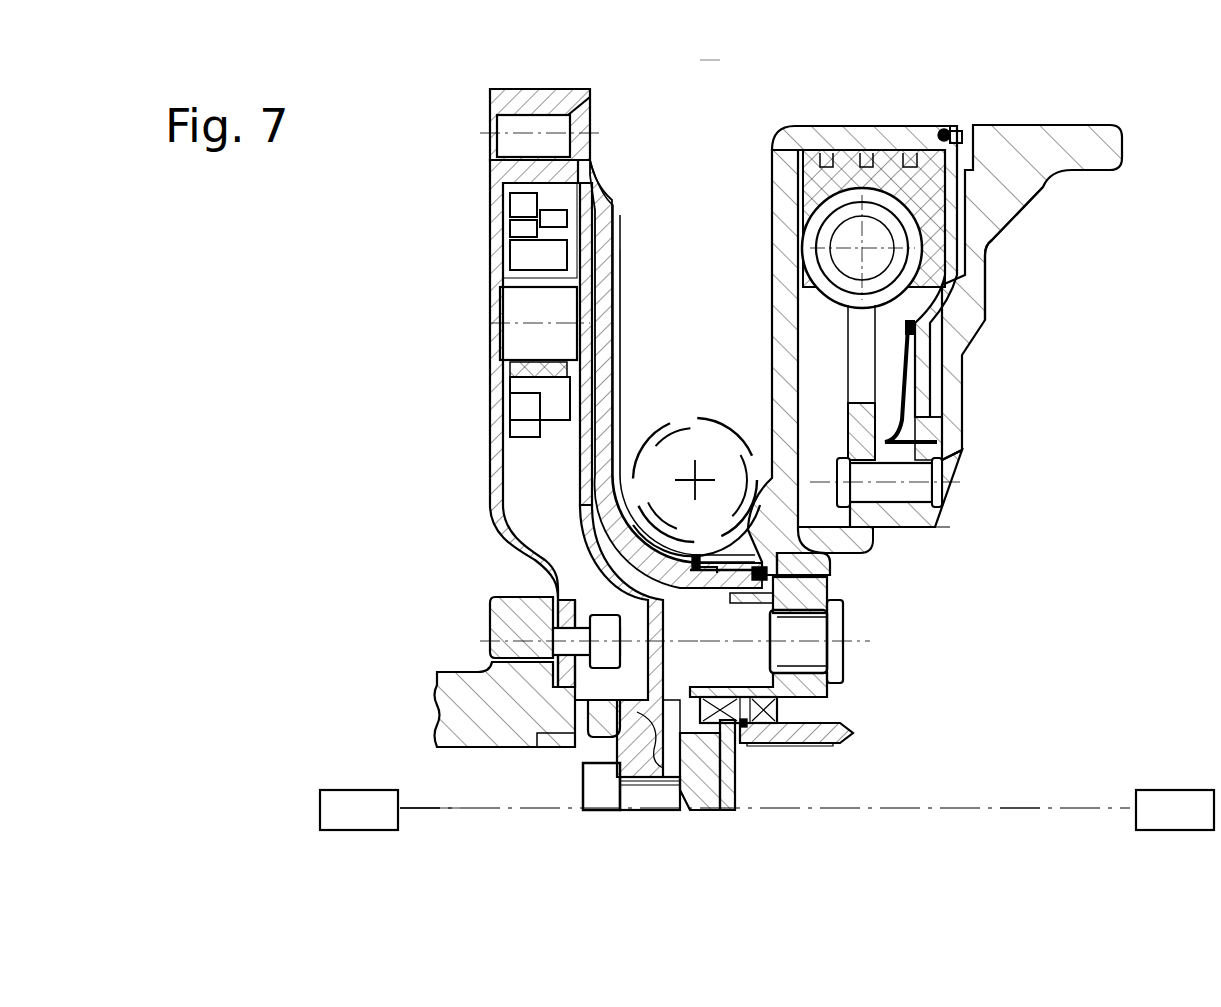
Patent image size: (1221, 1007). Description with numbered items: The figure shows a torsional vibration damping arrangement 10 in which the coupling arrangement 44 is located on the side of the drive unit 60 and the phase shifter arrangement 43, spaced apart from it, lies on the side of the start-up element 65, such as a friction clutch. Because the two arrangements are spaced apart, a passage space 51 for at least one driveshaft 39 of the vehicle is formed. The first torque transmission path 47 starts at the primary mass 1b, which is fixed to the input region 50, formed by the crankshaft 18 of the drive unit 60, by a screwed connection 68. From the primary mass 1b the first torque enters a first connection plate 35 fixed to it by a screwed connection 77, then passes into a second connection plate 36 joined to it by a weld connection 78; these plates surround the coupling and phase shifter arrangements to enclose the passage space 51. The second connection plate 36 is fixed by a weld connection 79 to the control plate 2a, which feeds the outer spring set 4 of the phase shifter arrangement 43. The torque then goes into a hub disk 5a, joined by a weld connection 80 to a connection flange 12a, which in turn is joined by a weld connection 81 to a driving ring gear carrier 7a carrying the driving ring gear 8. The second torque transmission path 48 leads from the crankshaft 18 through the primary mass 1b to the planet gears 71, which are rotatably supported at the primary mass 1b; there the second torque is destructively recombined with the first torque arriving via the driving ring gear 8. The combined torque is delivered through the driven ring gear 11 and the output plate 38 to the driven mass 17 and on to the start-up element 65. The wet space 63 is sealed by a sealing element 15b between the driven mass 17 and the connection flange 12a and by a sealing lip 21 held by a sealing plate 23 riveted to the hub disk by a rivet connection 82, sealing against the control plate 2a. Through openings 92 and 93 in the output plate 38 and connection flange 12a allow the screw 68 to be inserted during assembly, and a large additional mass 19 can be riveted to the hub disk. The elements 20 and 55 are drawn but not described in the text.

The torsional vibration damping arrangement 10 is at (716, 72).
The driven ring gear 11 is at (592, 148).
The primary mass 1b is at (523, 240).
The control plate 2a is at (995, 135).
The outer spring set 4 is at (912, 253).
The hub disk 5a is at (857, 430).
The driving ring gear carrier 7a is at (620, 543).
The driving ring gear 8 is at (527, 205).
The connection flange 12a is at (787, 593).
The sealing element 15b is at (767, 715).
The driven mass 17 is at (790, 732).
The crankshaft 18 is at (480, 697).
The additional mass 19 is at (1027, 163).
The hub 20 is at (720, 720).
The sealing lip 21 is at (917, 330).
The sealing plate 23 is at (907, 407).
The first connection plate 35 is at (620, 197).
The second connection plate 36 is at (795, 290).
The output plate 38 is at (583, 462).
The driveshaft 39 is at (665, 443).
The phase shifter arrangement 43 is at (847, 115).
The coupling arrangement 44 is at (515, 82).
The first torque transmission path 47 is at (478, 213).
The second torque transmission path 48 is at (470, 465).
The input region 50 is at (445, 815).
The passage space 51 is at (672, 285).
The output side 55 is at (1016, 812).
The drive unit 60 is at (341, 825).
The wet space 63 is at (828, 377).
The start-up element 65 is at (1157, 825).
The screwed connection 68 is at (510, 637).
The planet gears 71 is at (530, 238).
The screwed connection 77 is at (522, 118).
The weld connection 78 is at (697, 560).
The weld connection 79 is at (943, 128).
The weld connection 80 is at (827, 580).
The weld connection 81 is at (843, 530).
The rivet connection 82 is at (908, 475).
The through opening 92 is at (660, 633).
The through opening 93 is at (803, 658).